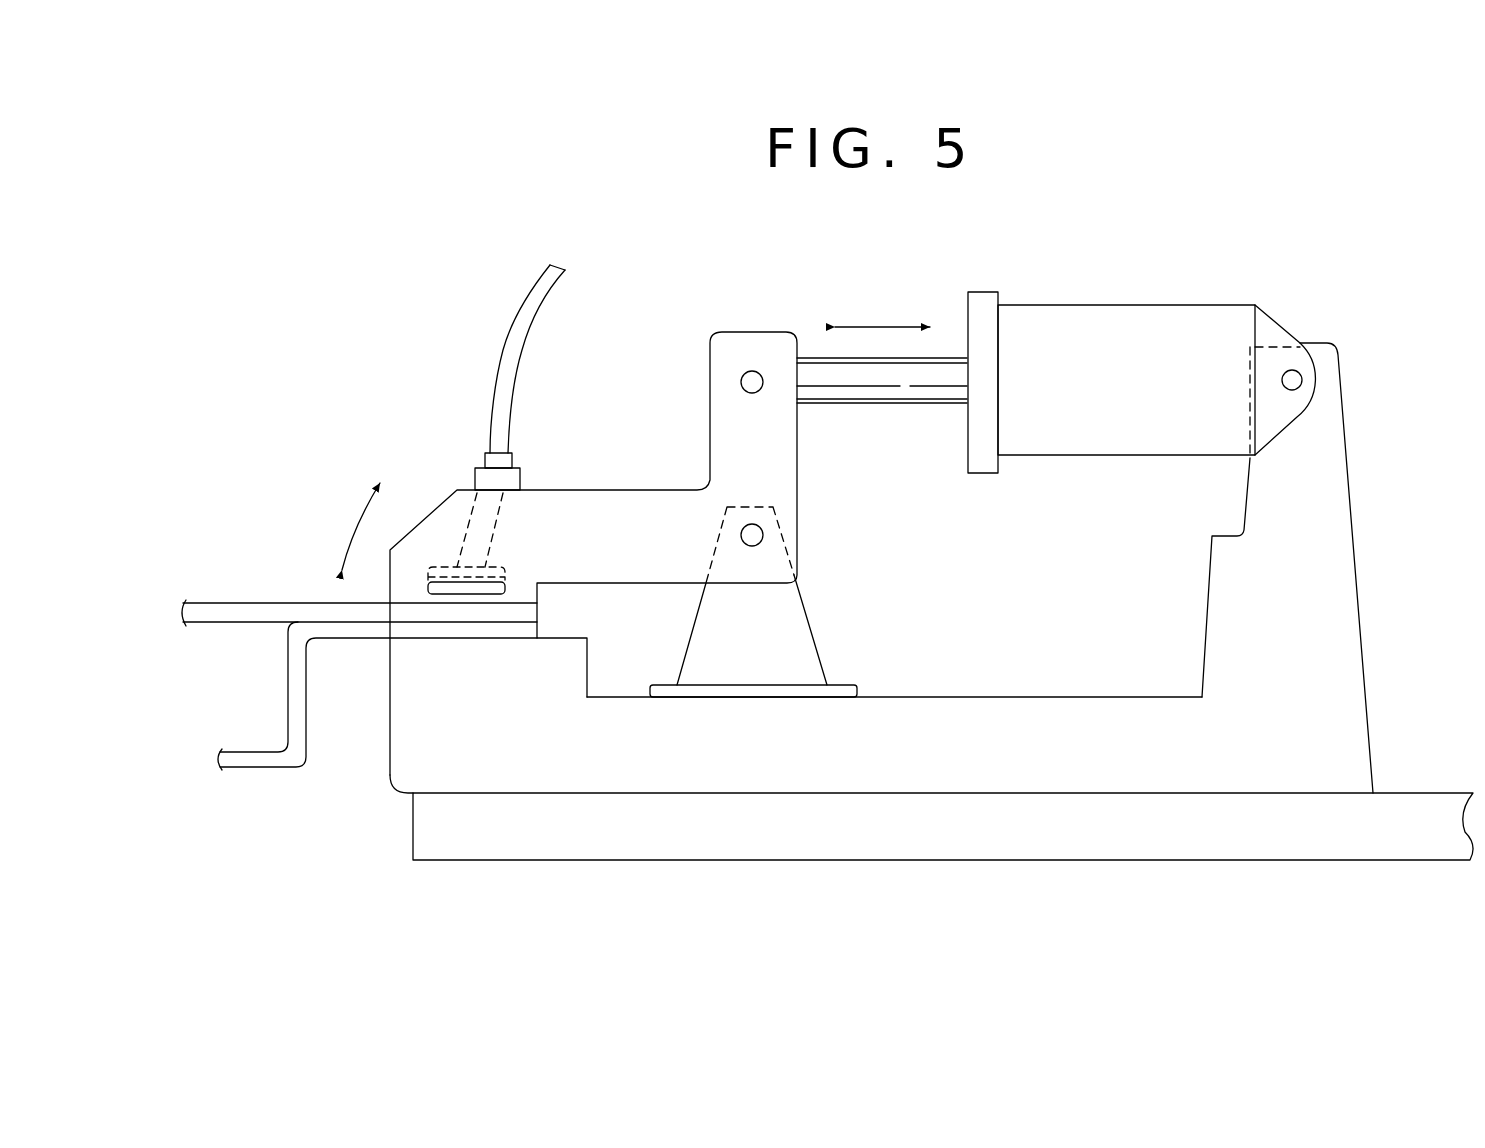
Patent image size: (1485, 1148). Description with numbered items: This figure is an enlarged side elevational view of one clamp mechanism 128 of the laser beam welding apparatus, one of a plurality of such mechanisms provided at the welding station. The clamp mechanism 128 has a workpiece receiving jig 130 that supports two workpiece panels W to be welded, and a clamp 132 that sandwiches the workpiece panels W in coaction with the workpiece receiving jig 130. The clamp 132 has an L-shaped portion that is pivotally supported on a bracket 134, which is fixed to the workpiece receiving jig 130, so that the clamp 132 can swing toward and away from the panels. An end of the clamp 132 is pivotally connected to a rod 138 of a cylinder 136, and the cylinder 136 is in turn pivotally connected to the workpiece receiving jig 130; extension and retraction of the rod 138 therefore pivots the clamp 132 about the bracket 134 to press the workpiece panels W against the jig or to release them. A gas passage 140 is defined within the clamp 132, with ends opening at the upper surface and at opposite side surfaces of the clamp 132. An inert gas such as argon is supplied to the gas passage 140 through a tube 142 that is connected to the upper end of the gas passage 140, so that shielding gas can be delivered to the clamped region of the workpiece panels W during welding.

The clamp mechanism 128 is at (1172, 258).
The workpiece receiving jig 130 is at (583, 773).
The clamp 132 is at (640, 510).
The bracket 134 is at (802, 637).
The cylinder 136 is at (1085, 322).
The rod 138 is at (873, 378).
The gas passage 140 is at (506, 510).
The tube 142 is at (523, 335).
The workpiece panels W is at (243, 603).